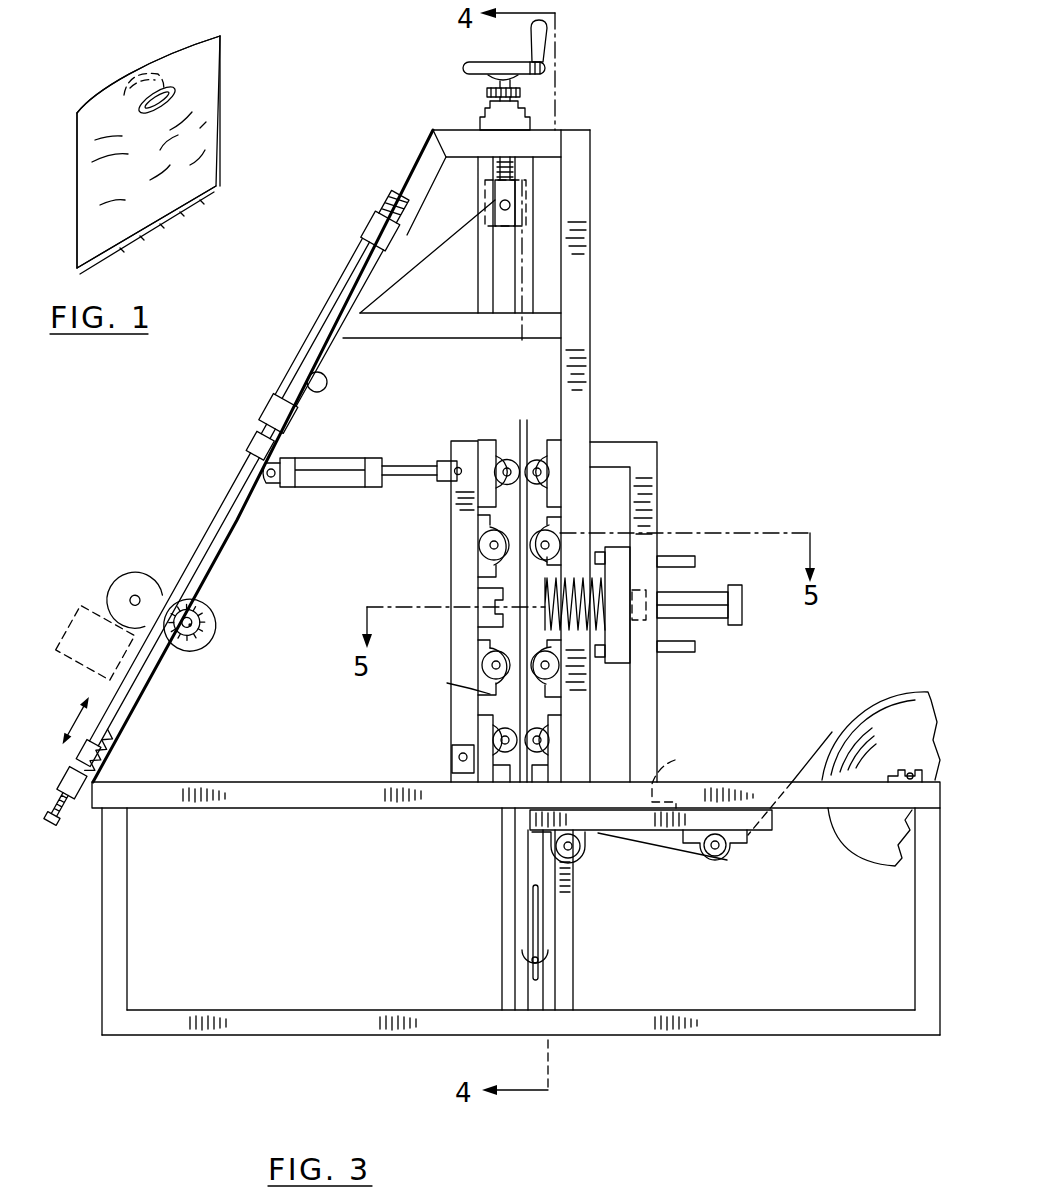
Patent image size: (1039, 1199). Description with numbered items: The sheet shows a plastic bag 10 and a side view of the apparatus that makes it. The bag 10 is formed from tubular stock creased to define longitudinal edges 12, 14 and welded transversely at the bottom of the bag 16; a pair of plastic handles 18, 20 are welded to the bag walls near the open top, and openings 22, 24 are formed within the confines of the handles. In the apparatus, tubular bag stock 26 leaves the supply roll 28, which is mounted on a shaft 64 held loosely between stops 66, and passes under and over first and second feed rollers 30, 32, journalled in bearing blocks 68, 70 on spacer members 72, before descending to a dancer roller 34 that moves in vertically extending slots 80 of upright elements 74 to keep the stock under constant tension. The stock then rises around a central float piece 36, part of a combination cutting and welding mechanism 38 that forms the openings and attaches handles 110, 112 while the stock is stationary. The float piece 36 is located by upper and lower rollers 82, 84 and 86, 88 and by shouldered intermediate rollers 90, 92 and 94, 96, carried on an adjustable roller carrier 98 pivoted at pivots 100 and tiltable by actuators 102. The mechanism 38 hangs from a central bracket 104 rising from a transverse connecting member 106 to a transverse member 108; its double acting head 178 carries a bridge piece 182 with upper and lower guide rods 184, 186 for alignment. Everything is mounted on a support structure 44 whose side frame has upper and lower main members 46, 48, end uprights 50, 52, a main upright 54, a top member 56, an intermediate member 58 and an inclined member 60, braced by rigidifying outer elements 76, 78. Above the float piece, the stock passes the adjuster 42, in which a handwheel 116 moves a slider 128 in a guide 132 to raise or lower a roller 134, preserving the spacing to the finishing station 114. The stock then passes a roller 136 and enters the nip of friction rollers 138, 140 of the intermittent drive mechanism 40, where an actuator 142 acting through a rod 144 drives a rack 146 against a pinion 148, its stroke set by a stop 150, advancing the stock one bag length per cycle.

In FIG. 1, the plastic bag 10 is at (232, 80).
In FIG. 1, the longitudinal edge 12 is at (77, 172).
In FIG. 1, the longitudinal edge 14 is at (222, 128).
In FIG. 1, the bottom of the bag 16 is at (172, 215).
In FIG. 1, the plastic handle 18 is at (150, 62).
In FIG. 1, the plastic handle 20 is at (186, 92).
In FIG. 1, the opening 22 is at (142, 84).
In FIG. 1, the opening 24 is at (172, 100).
In FIG. 3, the tubular bag stock 26 is at (808, 761).
In FIG. 3, the supply roll 28 is at (877, 698).
In FIG. 3, the first feed roller 30 is at (722, 856).
In FIG. 3, the second feed roller 32 is at (588, 851).
In FIG. 3, the dancer roller 34 is at (548, 960).
In FIG. 3, the central float piece 36 is at (515, 710).
In FIG. 3, the combination cutting and welding mechanism 38 is at (752, 628).
In FIG. 3, the intermittent drive mechanism 40 is at (190, 625).
In FIG. 3, the adjuster 42 is at (472, 75).
In FIG. 3, the support structure 44 is at (403, 440).
In FIG. 3, the upper main member 46 is at (331, 803).
In FIG. 3, the lower main member 48 is at (283, 1018).
In FIG. 3, the end upright 50 is at (118, 913).
In FIG. 3, the end upright 52 is at (921, 924).
In FIG. 3, the main upright 54 is at (580, 270).
In FIG. 3, the top member 56 is at (456, 140).
In FIG. 3, the intermediate member 58 is at (414, 322).
In FIG. 3, the inclined member 60 is at (412, 182).
In FIG. 3, the shaft 64 is at (908, 770).
In FIG. 3, the stops 66 is at (914, 788).
In FIG. 3, the bearing block 68 is at (710, 857).
In FIG. 3, the bearing block 70 is at (575, 858).
In FIG. 3, the spacer member 72 is at (648, 825).
In FIG. 3, the upright element 74 is at (537, 997).
In FIG. 3, the rigidifying outer element 76 is at (507, 945).
In FIG. 3, the rigidifying outer element 78 is at (566, 913).
In FIG. 3, the vertically extending slot 80 is at (537, 910).
In FIG. 3, the upper roller 82 is at (517, 440).
In FIG. 3, the upper roller 84 is at (536, 446).
In FIG. 3, the lower roller 86 is at (505, 763).
In FIG. 3, the lower roller 88 is at (535, 763).
In FIG. 3, the intermediate roller 90 is at (492, 572).
In FIG. 3, the intermediate roller 92 is at (556, 556).
In FIG. 3, the intermediate roller 94 is at (450, 684).
In FIG. 3, the intermediate roller 96 is at (545, 690).
In FIG. 3, the adjustable roller carrier 98 is at (465, 652).
In FIG. 3, the pivot 100 is at (452, 760).
In FIG. 3, the actuator 102 is at (343, 460).
In FIG. 3, the central bracket 104 is at (650, 472).
In FIG. 3, the transverse connecting member 106 is at (684, 778).
In FIG. 3, the transverse member 108 is at (582, 456).
In FIG. 3, the handle 110 is at (490, 588).
In FIG. 3, the handle 112 is at (535, 620).
In FIG. 3, the finishing station 114 is at (95, 642).
In FIG. 3, the handwheel 116 is at (476, 66).
In FIG. 3, the slider 128 is at (505, 228).
In FIG. 3, the guide 132 is at (515, 284).
In FIG. 3, the roller 134 is at (535, 222).
In FIG. 3, the roller 136 is at (328, 387).
In FIG. 3, the friction roller 138 is at (132, 598).
In FIG. 3, the friction roller 140 is at (189, 625).
In FIG. 3, the actuator 142 is at (336, 310).
In FIG. 3, the rod 144 is at (175, 599).
In FIG. 3, the rack 146 is at (100, 751).
In FIG. 3, the pinion 148 is at (186, 622).
In FIG. 3, the stop 150 is at (64, 796).
In FIG. 3, the double acting head 178 is at (583, 572).
In FIG. 3, the bridge piece 182 is at (615, 665).
In FIG. 3, the upper guide rod 184 is at (695, 561).
In FIG. 3, the lower guide rod 186 is at (695, 652).